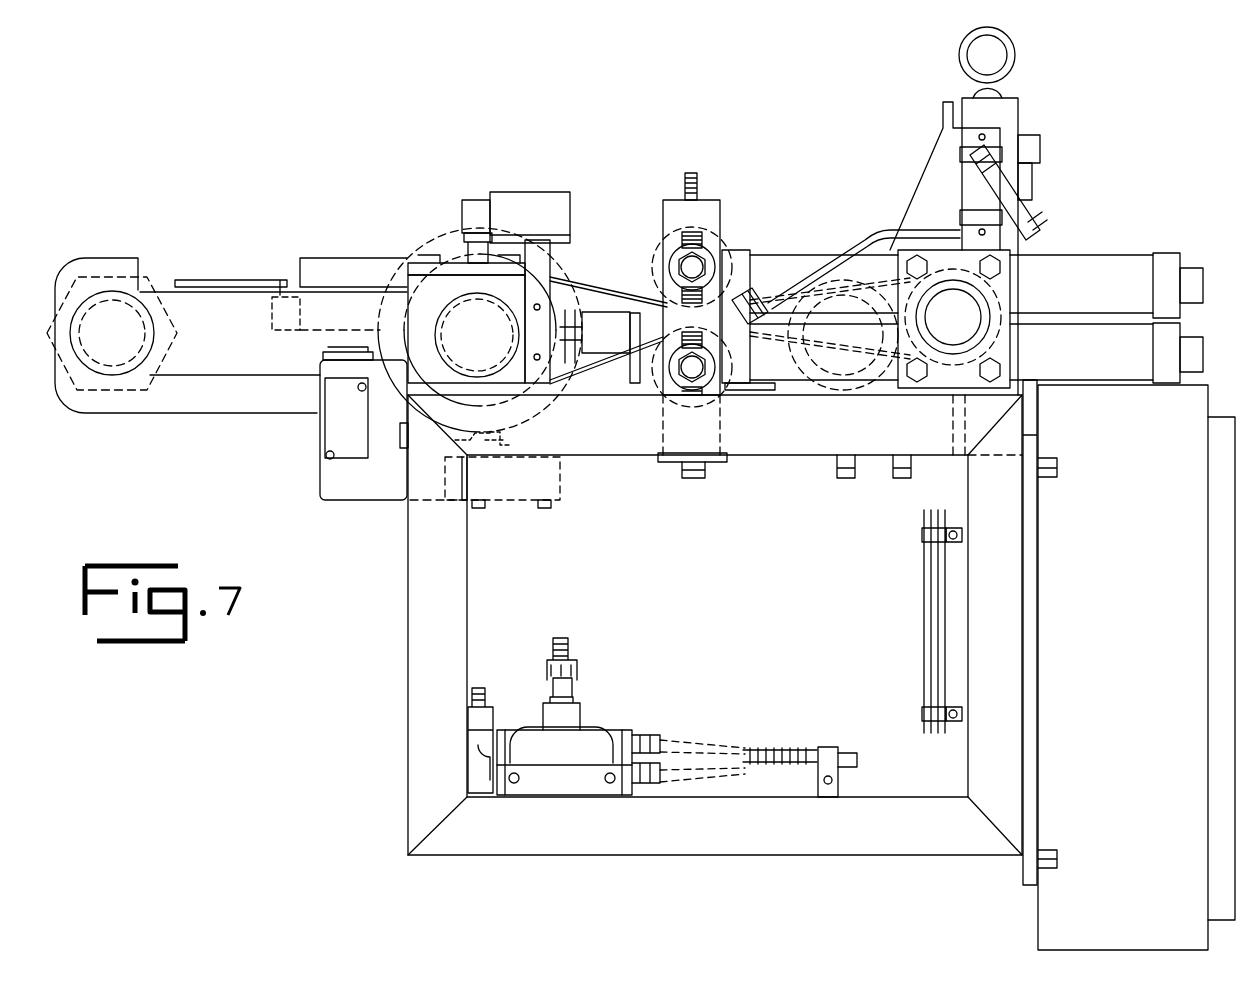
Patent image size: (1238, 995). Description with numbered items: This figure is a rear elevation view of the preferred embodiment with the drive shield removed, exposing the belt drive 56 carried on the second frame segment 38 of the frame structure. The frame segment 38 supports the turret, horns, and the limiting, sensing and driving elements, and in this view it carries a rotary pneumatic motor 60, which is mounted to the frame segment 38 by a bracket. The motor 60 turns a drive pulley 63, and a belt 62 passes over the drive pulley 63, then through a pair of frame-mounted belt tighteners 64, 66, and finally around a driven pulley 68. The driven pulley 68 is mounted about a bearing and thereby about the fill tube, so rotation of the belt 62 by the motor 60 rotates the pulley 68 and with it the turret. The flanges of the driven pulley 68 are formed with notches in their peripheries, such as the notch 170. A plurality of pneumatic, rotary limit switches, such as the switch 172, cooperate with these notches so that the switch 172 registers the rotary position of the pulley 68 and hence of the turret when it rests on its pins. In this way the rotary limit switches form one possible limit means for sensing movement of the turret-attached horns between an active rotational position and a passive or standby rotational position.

The second frame segment 38 is at (787, 443).
The belt drive 56 is at (780, 238).
The rotary pneumatic motor 60 is at (1114, 248).
The belt 62 is at (592, 290).
The drive pulley 63 is at (993, 298).
The belt tightener 64 is at (715, 253).
The belt tightener 66 is at (725, 387).
The driven pulley 68 is at (437, 242).
The notch 170 is at (433, 257).
The pneumatic rotary limit switch 172 is at (512, 215).